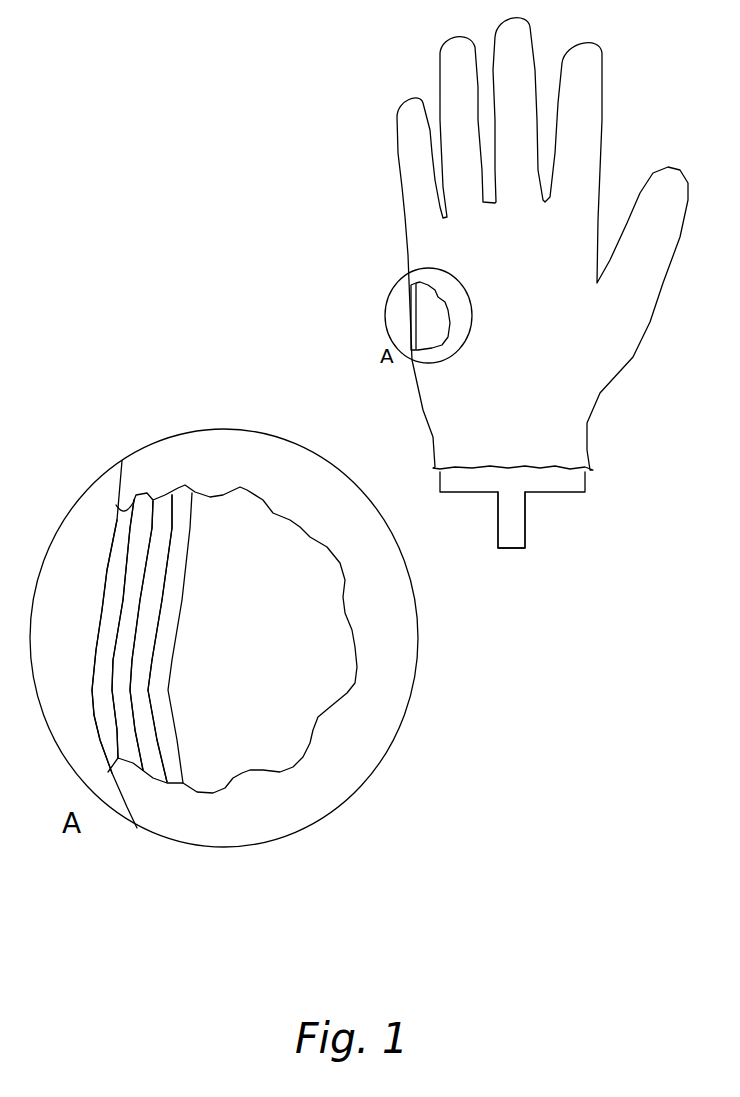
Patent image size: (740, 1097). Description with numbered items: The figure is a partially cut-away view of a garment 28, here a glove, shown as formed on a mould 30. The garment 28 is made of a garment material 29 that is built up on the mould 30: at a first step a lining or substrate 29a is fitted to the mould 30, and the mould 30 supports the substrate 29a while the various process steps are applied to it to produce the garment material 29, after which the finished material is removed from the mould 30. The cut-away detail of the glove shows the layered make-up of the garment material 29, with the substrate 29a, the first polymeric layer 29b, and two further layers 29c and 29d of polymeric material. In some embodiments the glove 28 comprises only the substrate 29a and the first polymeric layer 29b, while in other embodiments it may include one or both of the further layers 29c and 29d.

The garment 28 is at (352, 117).
The garment material 29 is at (411, 297).
The substrate 29a is at (185, 507).
The first polymeric layer 29b is at (155, 572).
The further layer of polymeric material 29c is at (135, 561).
The further layer of polymeric material 29d is at (100, 650).
The mould 30 is at (513, 522).